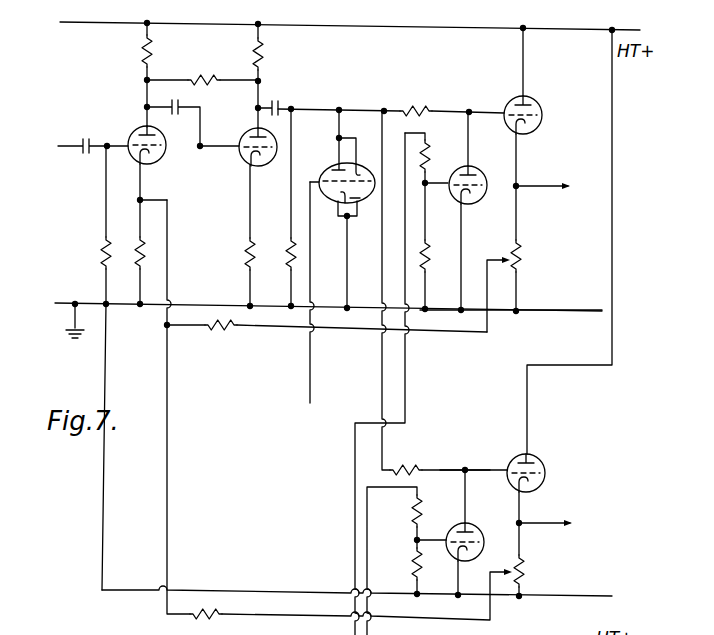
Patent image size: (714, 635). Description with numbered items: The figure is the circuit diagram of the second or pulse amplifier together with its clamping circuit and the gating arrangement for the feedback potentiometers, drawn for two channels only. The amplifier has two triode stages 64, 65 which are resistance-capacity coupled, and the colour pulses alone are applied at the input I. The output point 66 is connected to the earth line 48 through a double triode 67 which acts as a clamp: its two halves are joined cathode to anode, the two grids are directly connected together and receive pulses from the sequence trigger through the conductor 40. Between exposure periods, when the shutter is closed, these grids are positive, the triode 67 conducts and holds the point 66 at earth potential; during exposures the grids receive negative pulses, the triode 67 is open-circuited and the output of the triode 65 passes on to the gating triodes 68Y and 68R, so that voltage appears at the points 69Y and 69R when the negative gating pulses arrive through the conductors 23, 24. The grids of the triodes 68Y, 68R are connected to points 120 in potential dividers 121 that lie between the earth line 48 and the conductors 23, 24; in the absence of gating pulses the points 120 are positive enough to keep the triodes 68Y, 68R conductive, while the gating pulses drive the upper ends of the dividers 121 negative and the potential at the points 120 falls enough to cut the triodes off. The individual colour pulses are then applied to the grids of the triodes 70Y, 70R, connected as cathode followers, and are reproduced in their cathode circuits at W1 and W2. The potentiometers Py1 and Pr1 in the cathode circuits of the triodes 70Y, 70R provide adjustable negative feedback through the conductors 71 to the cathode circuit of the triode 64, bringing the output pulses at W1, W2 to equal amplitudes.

The triode stage 64 is at (131, 160).
The triode stage 65 is at (244, 162).
The output point 66 is at (340, 108).
The double triode 67 is at (325, 170).
The point 69Y is at (469, 111).
The triode 70Y is at (541, 109).
The gating triode 68Y is at (478, 167).
The potential divider 121 is at (428, 149).
The point 120 is at (428, 190).
The earth line 48 is at (500, 314).
The conductor 71 is at (277, 332).
The conductor 40 is at (305, 368).
The conductor 23 is at (350, 580).
The conductor 24 is at (367, 584).
The point 69R is at (466, 469).
The triode 70R is at (545, 467).
The gating triode 68R is at (480, 553).
The output W1 is at (528, 197).
The output W2 is at (530, 520).
The potentiometer Py1 is at (526, 285).
The potentiometer Pr1 is at (543, 569).
The input I is at (85, 146).